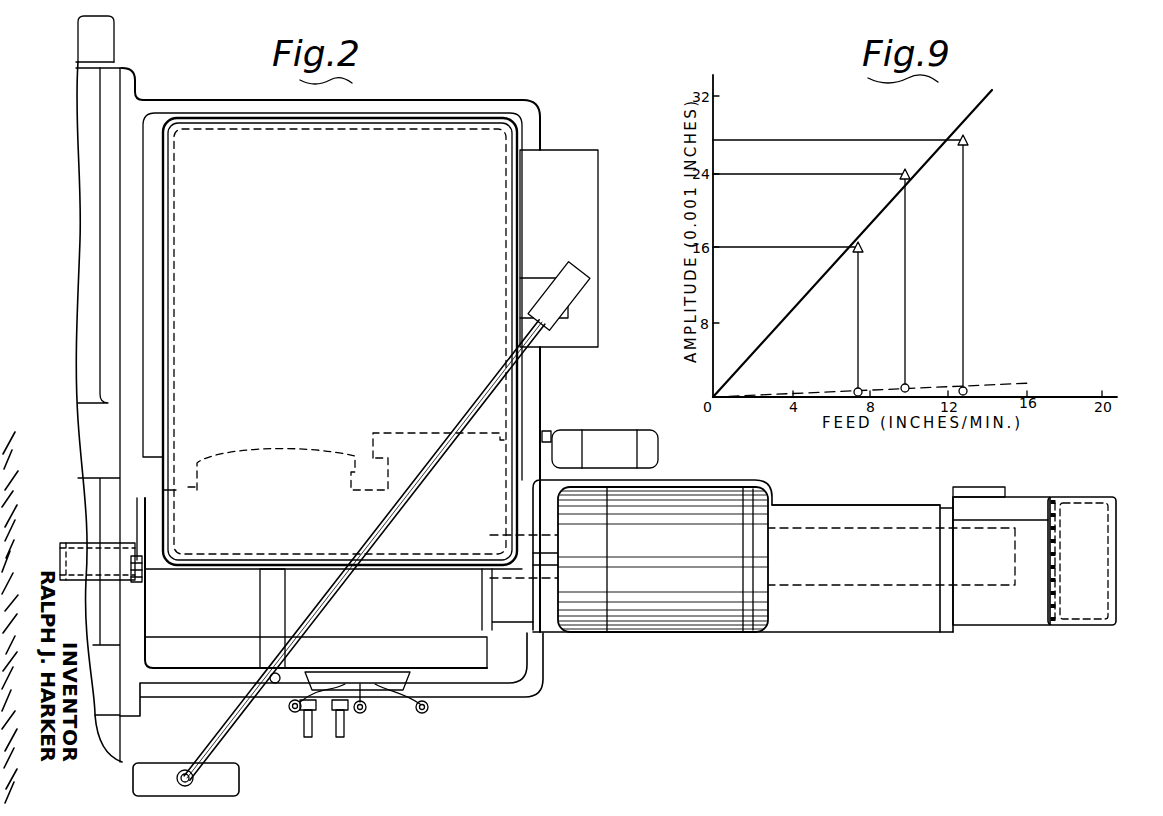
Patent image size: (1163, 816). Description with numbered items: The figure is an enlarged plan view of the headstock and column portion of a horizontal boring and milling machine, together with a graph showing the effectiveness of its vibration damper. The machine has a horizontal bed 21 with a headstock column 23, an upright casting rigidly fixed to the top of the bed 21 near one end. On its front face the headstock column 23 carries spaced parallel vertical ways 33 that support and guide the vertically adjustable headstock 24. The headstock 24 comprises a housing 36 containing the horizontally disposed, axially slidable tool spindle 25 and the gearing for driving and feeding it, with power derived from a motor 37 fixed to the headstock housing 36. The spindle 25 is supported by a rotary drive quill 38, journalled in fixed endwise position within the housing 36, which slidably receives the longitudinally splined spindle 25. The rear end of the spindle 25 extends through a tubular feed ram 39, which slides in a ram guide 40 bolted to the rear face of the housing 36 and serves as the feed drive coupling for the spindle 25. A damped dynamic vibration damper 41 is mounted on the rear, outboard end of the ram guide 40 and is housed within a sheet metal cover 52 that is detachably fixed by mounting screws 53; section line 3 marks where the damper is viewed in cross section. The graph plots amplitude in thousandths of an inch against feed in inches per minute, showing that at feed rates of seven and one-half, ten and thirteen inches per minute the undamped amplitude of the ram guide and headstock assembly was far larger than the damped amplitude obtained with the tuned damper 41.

The horizontal bed 21 is at (135, 708).
The headstock column 23 is at (150, 282).
The headstock 24 is at (455, 680).
The tool spindle 25 is at (75, 553).
The vertical ways 33 is at (196, 490).
The housing 36 is at (472, 645).
The motor 37 is at (690, 620).
The rotary drive quill 38 is at (141, 578).
The tubular feed ram 39 is at (834, 524).
The ram guide 40 is at (865, 622).
The damped dynamic vibration damper 41 is at (1093, 492).
The sheet metal cover 52 is at (1117, 555).
The mounting screws 53 is at (1067, 520).
The section line 3- 3 is at (1155, 600).